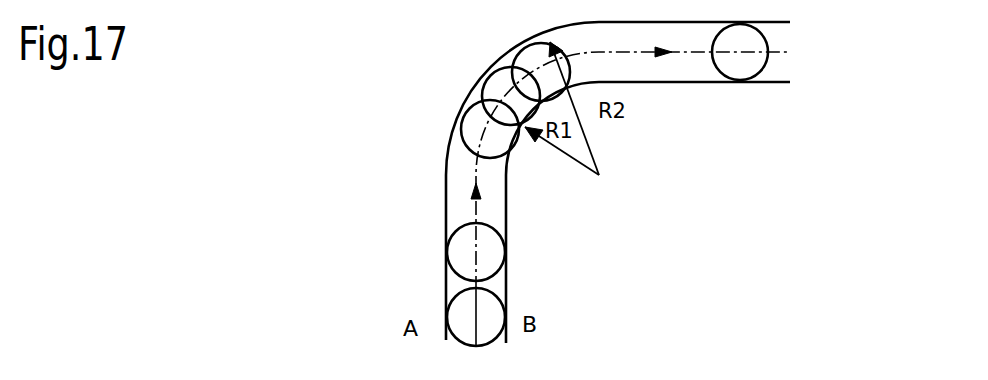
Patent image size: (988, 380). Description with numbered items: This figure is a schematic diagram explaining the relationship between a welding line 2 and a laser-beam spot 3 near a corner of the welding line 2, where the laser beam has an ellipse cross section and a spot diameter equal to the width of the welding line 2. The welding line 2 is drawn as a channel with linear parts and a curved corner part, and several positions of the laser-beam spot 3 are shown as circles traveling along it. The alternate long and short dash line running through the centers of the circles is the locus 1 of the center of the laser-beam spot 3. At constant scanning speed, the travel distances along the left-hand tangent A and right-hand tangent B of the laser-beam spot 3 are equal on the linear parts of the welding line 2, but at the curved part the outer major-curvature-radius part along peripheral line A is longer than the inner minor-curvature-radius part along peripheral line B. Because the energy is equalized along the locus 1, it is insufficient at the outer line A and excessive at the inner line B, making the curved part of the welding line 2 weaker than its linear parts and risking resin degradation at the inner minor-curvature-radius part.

The locus of the center of the laser spot 1 is at (482, 313).
The welding line 2 is at (480, 201).
The laser-beam spot 3 is at (487, 254).